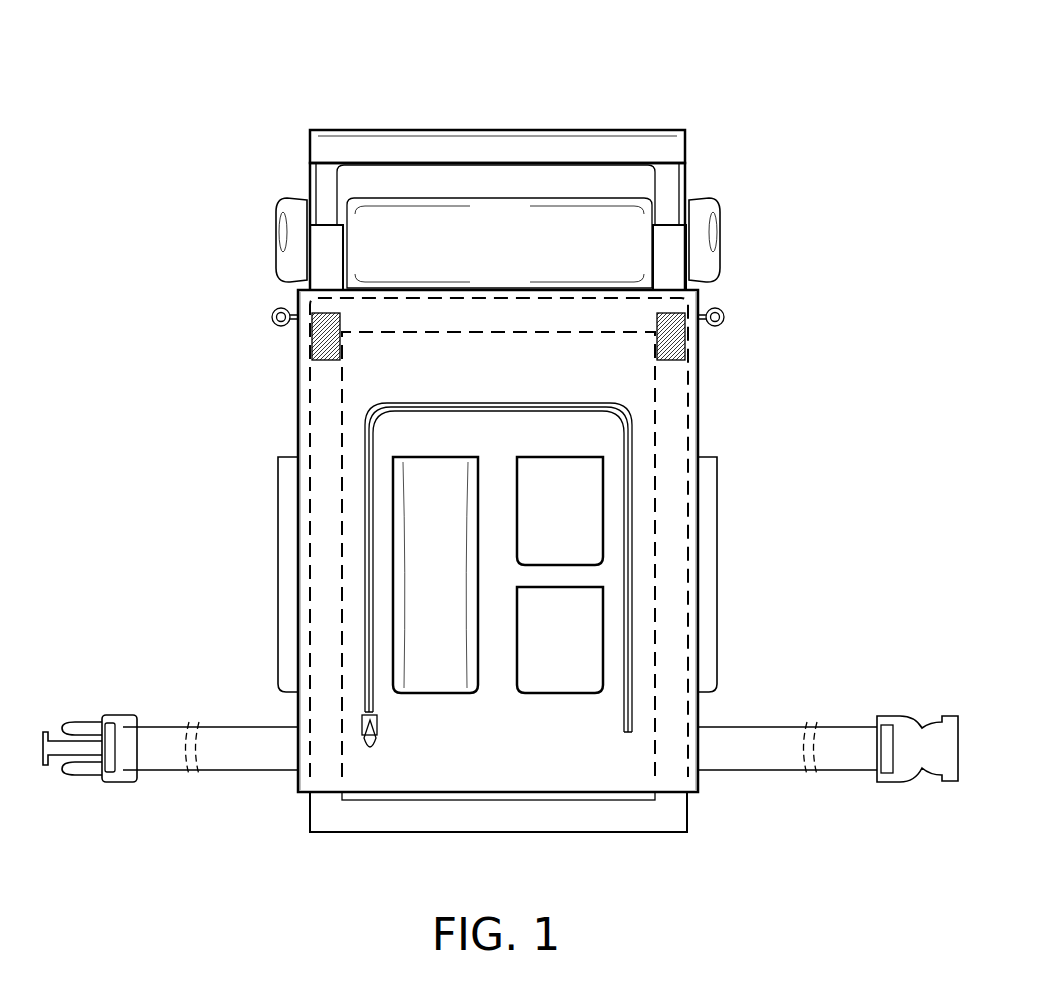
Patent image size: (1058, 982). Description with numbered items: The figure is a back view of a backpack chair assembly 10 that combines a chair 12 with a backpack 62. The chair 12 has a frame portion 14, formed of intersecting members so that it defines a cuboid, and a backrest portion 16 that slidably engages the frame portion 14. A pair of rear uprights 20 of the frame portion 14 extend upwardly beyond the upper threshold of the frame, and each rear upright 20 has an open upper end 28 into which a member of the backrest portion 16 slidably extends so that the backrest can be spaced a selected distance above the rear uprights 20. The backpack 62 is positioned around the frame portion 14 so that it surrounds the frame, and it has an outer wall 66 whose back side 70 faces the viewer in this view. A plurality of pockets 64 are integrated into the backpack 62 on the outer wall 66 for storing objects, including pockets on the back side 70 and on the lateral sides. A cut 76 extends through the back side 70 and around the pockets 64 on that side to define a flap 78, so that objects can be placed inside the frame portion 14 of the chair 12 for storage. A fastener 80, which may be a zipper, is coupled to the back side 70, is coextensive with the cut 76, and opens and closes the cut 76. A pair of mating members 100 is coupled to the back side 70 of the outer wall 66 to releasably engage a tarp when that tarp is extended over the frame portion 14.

The backpack chair assembly 10 is at (170, 98).
The chair 12 is at (283, 150).
The frame portion 14 is at (700, 840).
The backrest portion 16 is at (700, 128).
The rear uprights 20 is at (305, 246).
The upper end 28 is at (325, 238).
The backpack 62 is at (365, 382).
The pockets 64 is at (278, 530).
The outer wall 66 is at (617, 388).
The back side 70 is at (492, 360).
The cut 76 is at (367, 567).
The flap 78 is at (435, 457).
The fastener 80 is at (371, 753).
The mating members 100 is at (325, 342).